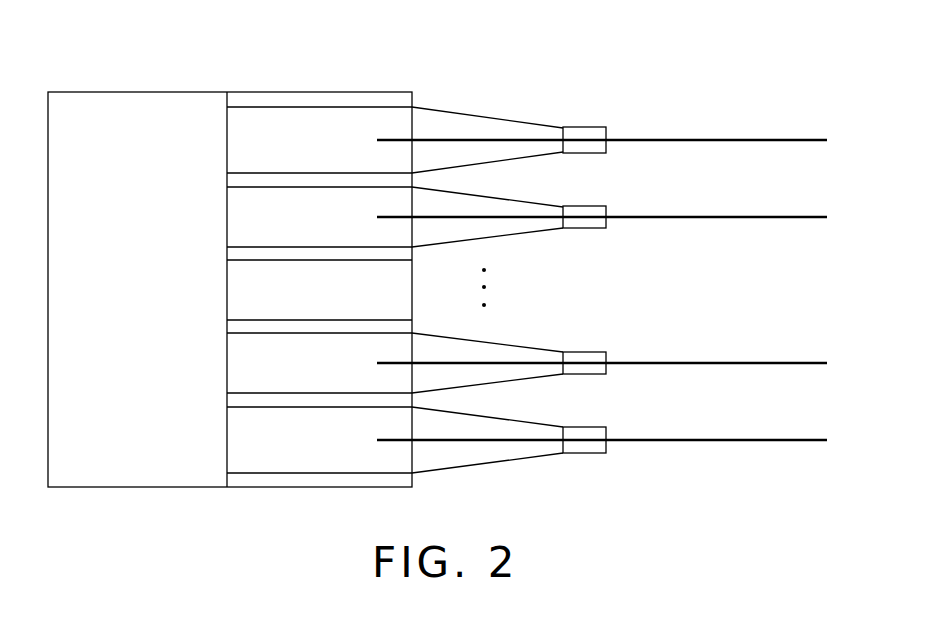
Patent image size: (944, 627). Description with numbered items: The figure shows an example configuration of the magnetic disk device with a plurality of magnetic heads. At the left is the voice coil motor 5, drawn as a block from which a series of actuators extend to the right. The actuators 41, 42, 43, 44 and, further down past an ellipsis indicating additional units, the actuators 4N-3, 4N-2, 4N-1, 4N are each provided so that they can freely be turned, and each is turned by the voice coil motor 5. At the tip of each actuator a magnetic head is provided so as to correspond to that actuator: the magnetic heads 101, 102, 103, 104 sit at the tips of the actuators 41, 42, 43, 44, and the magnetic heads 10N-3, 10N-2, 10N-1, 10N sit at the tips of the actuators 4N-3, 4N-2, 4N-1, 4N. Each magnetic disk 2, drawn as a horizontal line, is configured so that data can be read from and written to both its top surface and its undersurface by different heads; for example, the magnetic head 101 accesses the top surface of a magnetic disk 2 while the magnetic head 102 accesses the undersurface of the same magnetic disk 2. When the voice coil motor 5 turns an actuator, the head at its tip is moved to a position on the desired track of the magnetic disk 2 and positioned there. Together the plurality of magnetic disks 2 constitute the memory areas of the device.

The voice coil motor 5 is at (80, 92).
The magnetic disk 2 is at (743, 214).
The actuator 41 is at (548, 113).
The actuator 42 is at (523, 166).
The actuator 43 is at (545, 190).
The actuator 44 is at (543, 242).
The magnetic head 101 is at (606, 132).
The magnetic head 102 is at (606, 148).
The magnetic head 103 is at (606, 210).
The magnetic head 104 is at (606, 226).
The actuator 4N-3 is at (548, 336).
The actuator 4N-2 is at (523, 386).
The actuator 4N-1 is at (548, 411).
The actuator 4N is at (543, 467).
The magnetic head 10N-3 is at (606, 357).
The magnetic head 10N-2 is at (606, 370).
The magnetic head 10N-1 is at (606, 432).
The magnetic head 10N is at (606, 448).